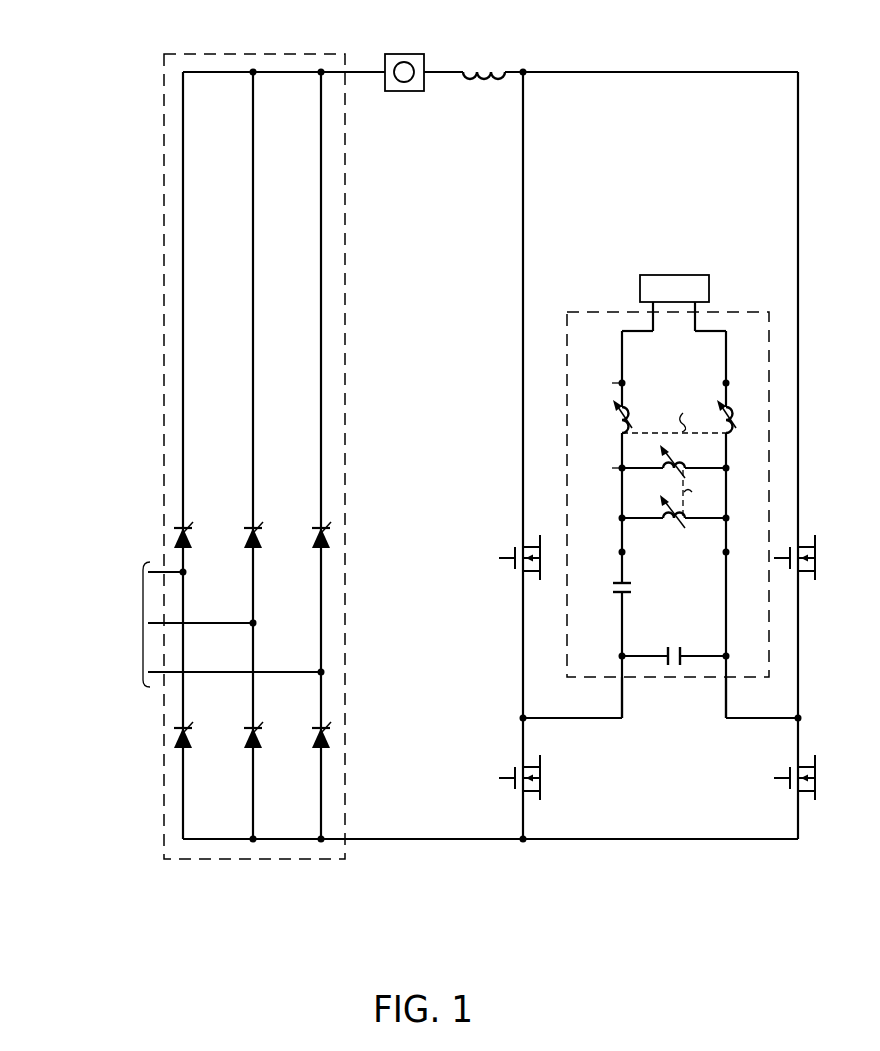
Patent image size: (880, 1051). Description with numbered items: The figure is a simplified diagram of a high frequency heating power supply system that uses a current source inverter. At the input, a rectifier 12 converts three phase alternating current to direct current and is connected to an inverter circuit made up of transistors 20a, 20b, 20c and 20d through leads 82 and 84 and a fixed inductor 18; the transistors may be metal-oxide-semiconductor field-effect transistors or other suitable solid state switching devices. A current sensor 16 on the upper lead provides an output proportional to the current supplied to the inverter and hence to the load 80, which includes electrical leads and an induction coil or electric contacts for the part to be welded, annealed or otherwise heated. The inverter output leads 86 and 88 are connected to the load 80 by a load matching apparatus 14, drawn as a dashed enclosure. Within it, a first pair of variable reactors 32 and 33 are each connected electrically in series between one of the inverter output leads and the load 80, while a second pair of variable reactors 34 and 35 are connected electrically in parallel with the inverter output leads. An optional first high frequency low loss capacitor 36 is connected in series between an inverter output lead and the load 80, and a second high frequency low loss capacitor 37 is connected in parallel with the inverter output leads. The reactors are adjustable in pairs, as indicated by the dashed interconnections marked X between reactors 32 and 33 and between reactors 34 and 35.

The rectifier 12 is at (170, 143).
The load matching apparatus 14 is at (590, 437).
The current sensor 16 is at (404, 55).
The fixed inductor 18 is at (483, 70).
The transistor 20a is at (500, 573).
The transistor 20b is at (500, 790).
The transistor 20c is at (822, 565).
The transistor 20d is at (822, 787).
The variable reactor 32 is at (654, 419).
The variable reactor 33 is at (756, 419).
The variable reactor 34 is at (689, 458).
The variable reactor 35 is at (656, 510).
The first high frequency low loss capacitor 36 is at (638, 586).
The second high frequency low loss capacitor 37 is at (672, 648).
The load 80 is at (710, 288).
The lead 82 is at (437, 75).
The lead 84 is at (425, 839).
The inverter output lead 86 is at (620, 690).
The inverter output lead 88 is at (730, 694).